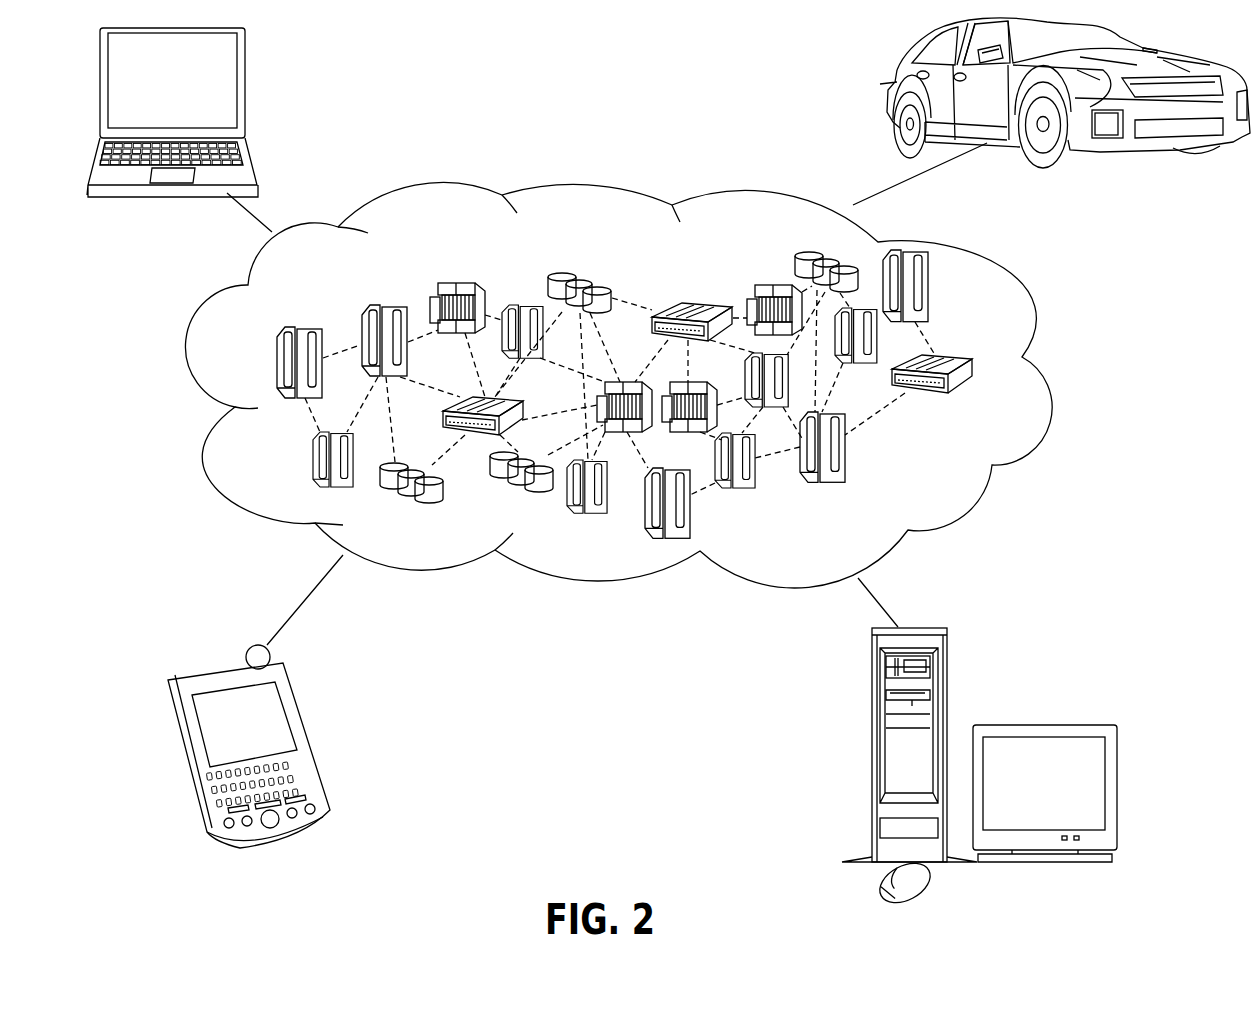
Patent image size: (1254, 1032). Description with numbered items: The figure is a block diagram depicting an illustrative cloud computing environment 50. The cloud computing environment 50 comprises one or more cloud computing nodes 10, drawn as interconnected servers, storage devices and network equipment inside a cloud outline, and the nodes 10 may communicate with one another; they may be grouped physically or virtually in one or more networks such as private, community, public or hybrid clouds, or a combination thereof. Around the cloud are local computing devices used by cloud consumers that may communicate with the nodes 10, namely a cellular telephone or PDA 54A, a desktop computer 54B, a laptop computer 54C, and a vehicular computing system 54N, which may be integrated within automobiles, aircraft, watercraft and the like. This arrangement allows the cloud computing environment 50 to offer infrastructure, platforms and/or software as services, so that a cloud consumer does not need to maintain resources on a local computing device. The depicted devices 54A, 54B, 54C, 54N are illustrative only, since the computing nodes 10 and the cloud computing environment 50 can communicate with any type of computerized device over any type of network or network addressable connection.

The cloud computing environment 50 is at (1045, 375).
The cloud computing node 10 is at (948, 473).
The cellular telephone or PDA 54A is at (300, 705).
The desktop computer 54B is at (870, 690).
The laptop computer 54C is at (247, 67).
The vehicular computing system 54N is at (887, 85).